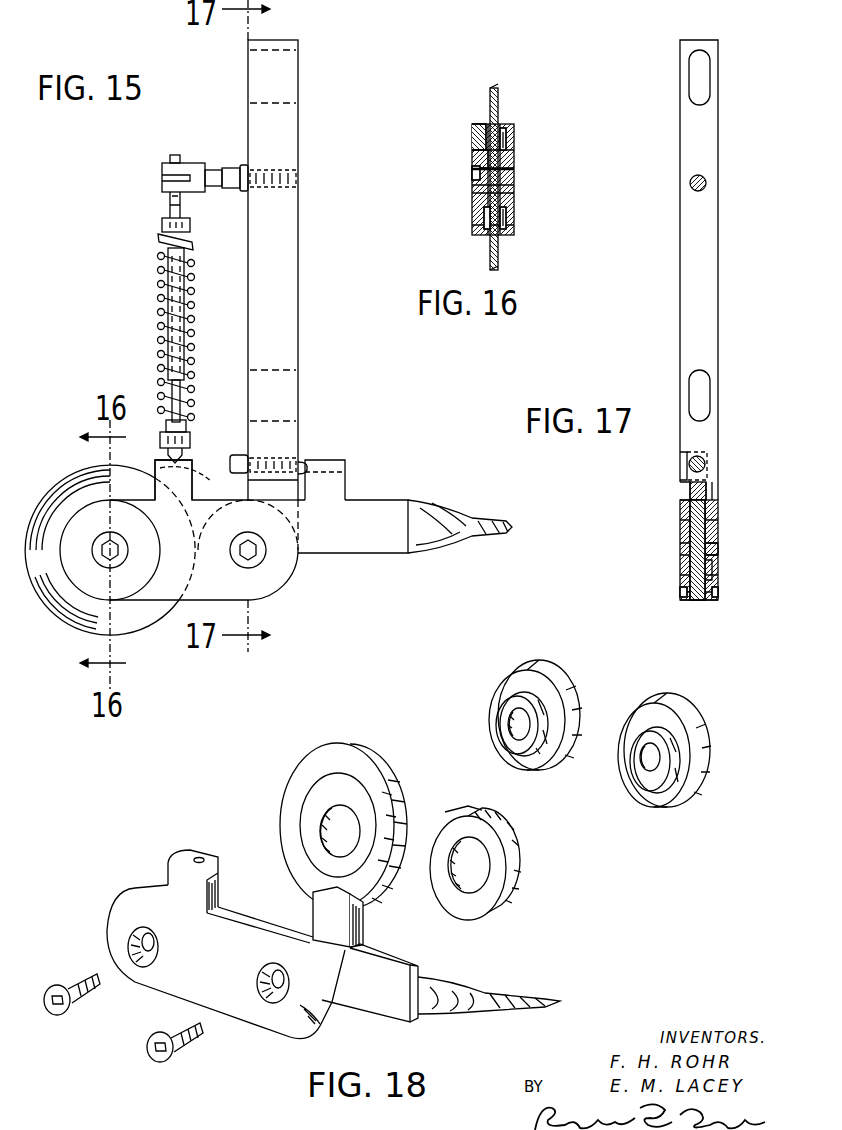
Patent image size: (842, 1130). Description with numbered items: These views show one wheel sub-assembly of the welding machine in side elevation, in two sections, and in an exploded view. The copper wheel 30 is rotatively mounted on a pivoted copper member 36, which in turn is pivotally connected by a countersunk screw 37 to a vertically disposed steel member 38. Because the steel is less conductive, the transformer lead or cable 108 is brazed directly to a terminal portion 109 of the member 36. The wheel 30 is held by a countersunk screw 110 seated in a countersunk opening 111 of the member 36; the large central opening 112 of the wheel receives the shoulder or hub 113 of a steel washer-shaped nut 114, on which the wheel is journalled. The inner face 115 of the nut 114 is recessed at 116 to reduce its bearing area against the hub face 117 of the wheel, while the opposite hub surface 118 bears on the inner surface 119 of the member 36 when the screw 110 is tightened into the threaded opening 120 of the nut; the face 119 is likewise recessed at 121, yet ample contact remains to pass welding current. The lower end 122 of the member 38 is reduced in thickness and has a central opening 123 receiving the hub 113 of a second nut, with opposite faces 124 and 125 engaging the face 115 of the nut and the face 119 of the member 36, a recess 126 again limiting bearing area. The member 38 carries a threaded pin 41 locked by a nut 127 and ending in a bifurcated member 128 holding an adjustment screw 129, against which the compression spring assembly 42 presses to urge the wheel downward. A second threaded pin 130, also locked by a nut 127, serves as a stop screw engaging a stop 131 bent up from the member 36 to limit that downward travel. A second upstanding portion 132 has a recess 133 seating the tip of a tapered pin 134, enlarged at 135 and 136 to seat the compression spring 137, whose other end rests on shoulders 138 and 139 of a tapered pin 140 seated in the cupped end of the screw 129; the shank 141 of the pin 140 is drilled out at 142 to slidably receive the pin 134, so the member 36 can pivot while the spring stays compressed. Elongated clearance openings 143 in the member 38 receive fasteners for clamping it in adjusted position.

In FIG. 15, the wheel 30 is at (46, 602).
In FIG. 16, the wheel 30 is at (497, 91).
In FIG. 18, the wheel 30 is at (366, 770).
In FIG. 15, the pivoted member 36 is at (287, 594).
In FIG. 16, the pivoted member 36 is at (472, 200).
In FIG. 17, the pivoted member 36 is at (720, 592).
In FIG. 18, the pivoted member 36 is at (270, 1040).
In FIG. 15, the countersunk screw 37 is at (239, 557).
In FIG. 17, the countersunk screw 37 is at (721, 538).
In FIG. 18, the countersunk screw 37 is at (151, 1058).
In FIG. 15, the vertically disposed member 38 is at (298, 288).
In FIG. 17, the vertically disposed member 38 is at (719, 286).
In FIG. 15, the threaded pin 41 is at (236, 170).
In FIG. 17, the threaded pin 41 is at (703, 187).
In FIG. 15, the compression spring assembly 42 is at (148, 333).
In FIG. 15, the transformer lead or cable 108 is at (488, 522).
In FIG. 18, the transformer lead or cable 108 is at (488, 999).
In FIG. 15, the terminal portion 109 is at (360, 506).
In FIG. 18, the terminal portion 109 is at (378, 953).
In FIG. 15, the countersunk screw 110 is at (104, 558).
In FIG. 16, the countersunk screw 110 is at (473, 168).
In FIG. 18, the countersunk screw 110 is at (45, 991).
In FIG. 18, the countersunk opening 111 is at (259, 982).
In FIG. 18, the central opening 112 is at (330, 843).
In FIG. 18, the shoulder or hub 113 is at (526, 696).
In FIG. 17, the washer-shaped nut 114 is at (681, 564).
In FIG. 18, the washer-shaped nut 114 is at (558, 680).
In FIG. 16, the inner face 115 is at (503, 127).
In FIG. 17, the inner face 115 is at (684, 596).
In FIG. 18, the inner face 115 is at (526, 672).
In FIG. 16, the recess 116 is at (505, 141).
In FIG. 18, the recess 116 is at (515, 690).
In FIG. 16, the hub face 117 is at (505, 209).
In FIG. 16, the opposite hub surface 118 is at (478, 142).
In FIG. 18, the opposite hub surface 118 is at (321, 798).
In FIG. 16, the inner surface 119 is at (474, 127).
In FIG. 17, the inner surface 119 is at (720, 600).
In FIG. 18, the inner surface 119 is at (255, 923).
In FIG. 16, the threaded opening 120 is at (509, 172).
In FIG. 18, the threaded opening 120 is at (520, 726).
In FIG. 16, the recess 121 is at (483, 222).
In FIG. 18, the lower end 122 is at (513, 851).
In FIG. 18, the central opening 123 is at (457, 882).
In FIG. 17, the face 124 is at (689, 492).
In FIG. 18, the face 124 is at (470, 809).
In FIG. 17, the face 125 is at (713, 488).
In FIG. 18, the face 125 is at (470, 908).
In FIG. 17, the recess 126 is at (718, 574).
In FIG. 15, the nut 127 is at (244, 163).
In FIG. 15, the bifurcated member 128 is at (197, 165).
In FIG. 15, the adjustment screw 129 is at (168, 158).
In FIG. 15, the second threaded pin 130 is at (237, 460).
In FIG. 17, the second threaded pin 130 is at (684, 453).
In FIG. 15, the stop 131 is at (318, 461).
In FIG. 17, the stop 131 is at (708, 461).
In FIG. 18, the stop 131 is at (320, 903).
In FIG. 15, the second angularly bent upstanding portion 132 is at (161, 463).
In FIG. 18, the second angularly bent upstanding portion 132 is at (180, 857).
In FIG. 15, the recess 133 is at (194, 483).
In FIG. 18, the recess 133 is at (208, 856).
In FIG. 15, the tapered pin 134 is at (188, 451).
In FIG. 15, the enlargement 135 is at (185, 430).
In FIG. 15, the enlargement 136 is at (188, 442).
In FIG. 15, the compression spring 137 is at (191, 322).
In FIG. 15, the shoulder 138 is at (191, 241).
In FIG. 15, the shoulder 139 is at (162, 225).
In FIG. 15, the tapered pin 140 is at (182, 210).
In FIG. 15, the shank 141 is at (172, 262).
In FIG. 15, the drilled bore 142 is at (181, 290).
In FIG. 15, the elongated clearance openings 143 is at (292, 103).
In FIG. 17, the elongated clearance openings 143 is at (711, 90).